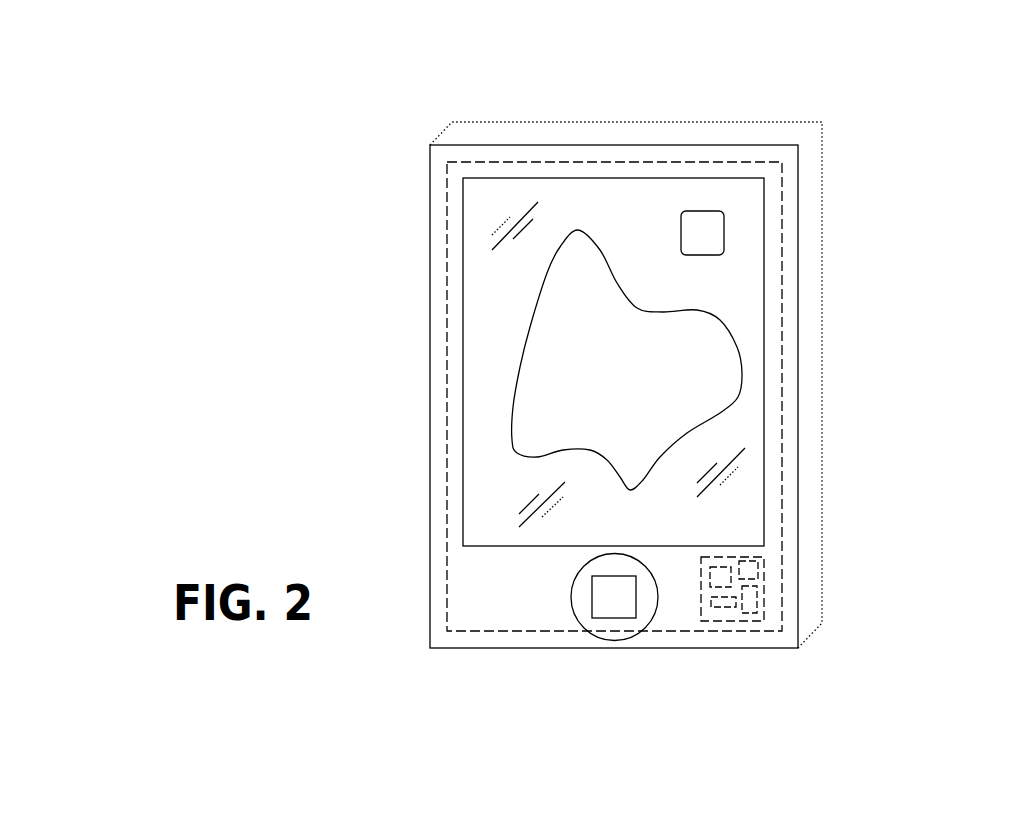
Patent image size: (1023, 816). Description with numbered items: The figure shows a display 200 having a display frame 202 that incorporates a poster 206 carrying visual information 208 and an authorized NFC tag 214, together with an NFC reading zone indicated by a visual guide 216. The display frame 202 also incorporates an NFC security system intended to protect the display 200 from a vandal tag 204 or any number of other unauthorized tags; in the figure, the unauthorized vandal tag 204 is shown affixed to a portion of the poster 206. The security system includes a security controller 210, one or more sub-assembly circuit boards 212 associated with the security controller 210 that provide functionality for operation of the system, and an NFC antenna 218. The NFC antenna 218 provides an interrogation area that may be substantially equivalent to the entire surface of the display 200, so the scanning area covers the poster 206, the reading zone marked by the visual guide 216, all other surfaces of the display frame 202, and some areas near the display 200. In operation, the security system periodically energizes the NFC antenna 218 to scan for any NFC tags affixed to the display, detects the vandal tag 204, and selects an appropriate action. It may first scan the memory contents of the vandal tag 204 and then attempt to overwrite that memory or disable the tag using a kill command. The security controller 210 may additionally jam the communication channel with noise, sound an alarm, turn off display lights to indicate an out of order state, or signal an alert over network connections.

The display 200 is at (584, 390).
The display frame 202 is at (527, 128).
The vandal tag 204 is at (703, 210).
The poster 206 is at (763, 307).
The visual information 208 is at (718, 417).
The security controller 210 is at (834, 648).
The sub-assembly circuit boards 212 is at (732, 608).
The authorized NFC tag 214 is at (637, 598).
The visual guide 216 is at (575, 603).
The NFC antenna 218 is at (447, 340).